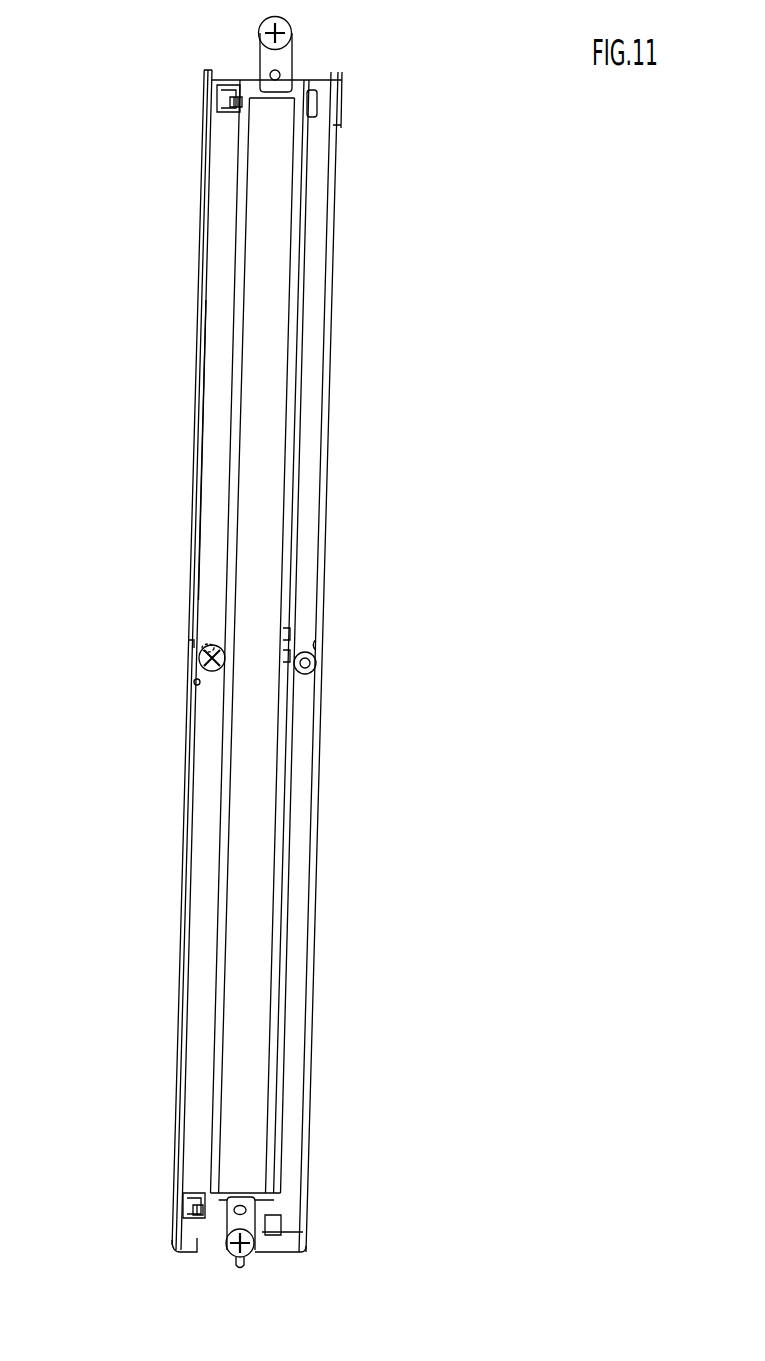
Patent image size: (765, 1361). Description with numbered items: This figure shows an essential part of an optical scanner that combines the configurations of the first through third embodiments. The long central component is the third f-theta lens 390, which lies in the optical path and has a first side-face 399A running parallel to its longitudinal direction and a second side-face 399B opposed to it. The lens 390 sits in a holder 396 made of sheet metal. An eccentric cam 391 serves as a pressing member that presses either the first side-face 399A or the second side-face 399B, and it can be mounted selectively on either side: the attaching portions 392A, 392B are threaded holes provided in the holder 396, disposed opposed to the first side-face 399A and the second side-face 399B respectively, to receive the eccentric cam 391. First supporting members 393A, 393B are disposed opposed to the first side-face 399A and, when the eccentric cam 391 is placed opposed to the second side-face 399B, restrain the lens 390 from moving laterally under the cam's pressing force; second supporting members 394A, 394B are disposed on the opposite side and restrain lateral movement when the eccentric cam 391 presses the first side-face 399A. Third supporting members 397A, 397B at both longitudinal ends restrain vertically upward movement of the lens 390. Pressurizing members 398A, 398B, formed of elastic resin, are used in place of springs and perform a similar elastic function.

The third f-theta lens 390 is at (262, 315).
The eccentric cam 391 is at (199, 662).
The attaching portion 392A is at (314, 668).
The attaching portion 392B is at (203, 642).
The first supporting member 393A is at (277, 1230).
The first supporting member 393B is at (315, 113).
The second supporting member 394A is at (192, 1225).
The second supporting member 394B is at (223, 118).
The holder 396 is at (300, 932).
The third supporting member 397A is at (257, 1237).
The third supporting member 397B is at (283, 61).
The pressurizing member 398A is at (200, 1197).
The pressurizing member 398B is at (234, 97).
The first side-face 399A is at (323, 466).
The second side-face 399B is at (207, 467).